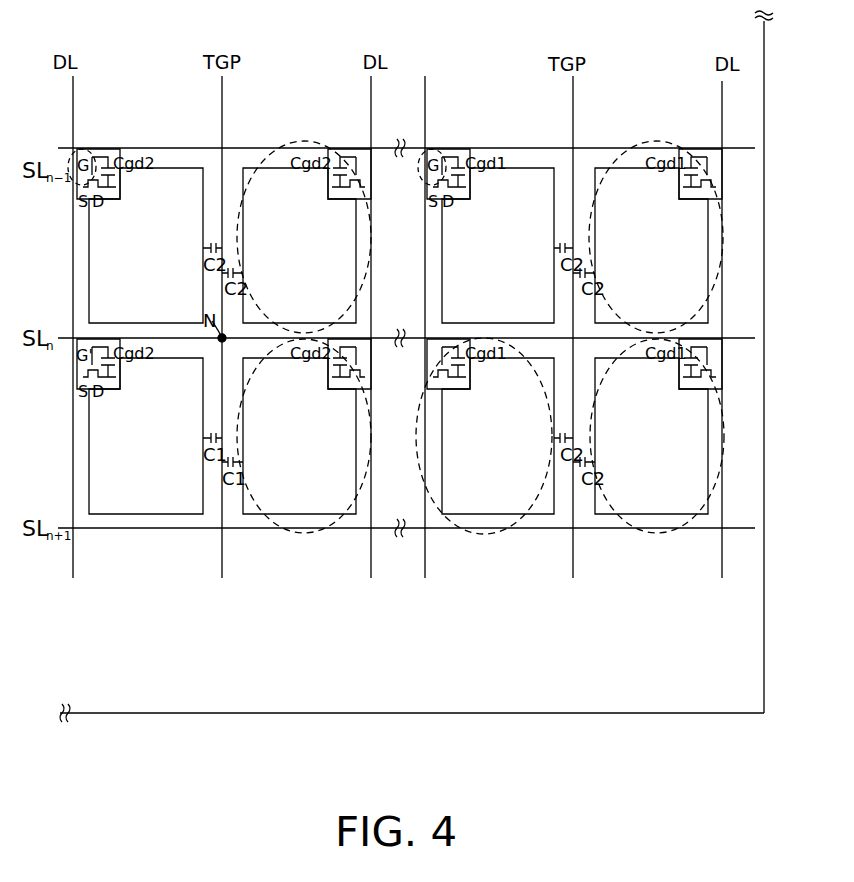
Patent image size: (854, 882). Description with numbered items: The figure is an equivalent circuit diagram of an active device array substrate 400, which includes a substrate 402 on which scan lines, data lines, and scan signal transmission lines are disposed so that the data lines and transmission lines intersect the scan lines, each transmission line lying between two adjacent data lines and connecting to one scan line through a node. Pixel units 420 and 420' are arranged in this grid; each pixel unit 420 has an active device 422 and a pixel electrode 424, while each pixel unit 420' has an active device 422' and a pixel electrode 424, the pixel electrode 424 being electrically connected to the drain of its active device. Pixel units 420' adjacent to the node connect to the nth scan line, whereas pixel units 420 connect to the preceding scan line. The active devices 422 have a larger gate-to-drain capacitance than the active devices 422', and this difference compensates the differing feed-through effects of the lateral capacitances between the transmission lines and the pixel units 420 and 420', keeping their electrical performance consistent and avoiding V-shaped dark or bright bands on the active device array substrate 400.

The active device array substrate 400 is at (712, 712).
The substrate 402 is at (765, 690).
The pixel unit 420 is at (414, 324).
The pixel unit 420' is at (238, 486).
The active device 422 is at (271, 139).
The active device 422' is at (94, 471).
The pixel electrode 424 is at (158, 166).